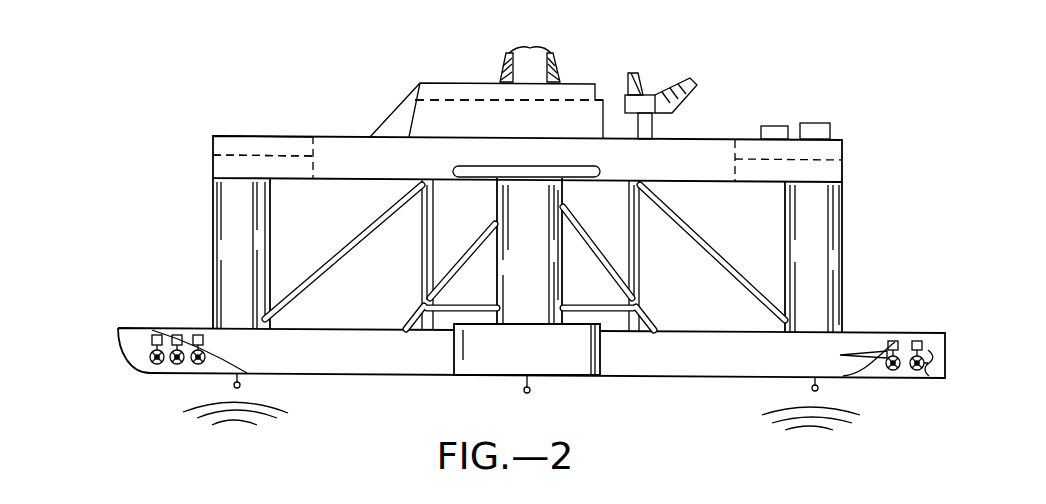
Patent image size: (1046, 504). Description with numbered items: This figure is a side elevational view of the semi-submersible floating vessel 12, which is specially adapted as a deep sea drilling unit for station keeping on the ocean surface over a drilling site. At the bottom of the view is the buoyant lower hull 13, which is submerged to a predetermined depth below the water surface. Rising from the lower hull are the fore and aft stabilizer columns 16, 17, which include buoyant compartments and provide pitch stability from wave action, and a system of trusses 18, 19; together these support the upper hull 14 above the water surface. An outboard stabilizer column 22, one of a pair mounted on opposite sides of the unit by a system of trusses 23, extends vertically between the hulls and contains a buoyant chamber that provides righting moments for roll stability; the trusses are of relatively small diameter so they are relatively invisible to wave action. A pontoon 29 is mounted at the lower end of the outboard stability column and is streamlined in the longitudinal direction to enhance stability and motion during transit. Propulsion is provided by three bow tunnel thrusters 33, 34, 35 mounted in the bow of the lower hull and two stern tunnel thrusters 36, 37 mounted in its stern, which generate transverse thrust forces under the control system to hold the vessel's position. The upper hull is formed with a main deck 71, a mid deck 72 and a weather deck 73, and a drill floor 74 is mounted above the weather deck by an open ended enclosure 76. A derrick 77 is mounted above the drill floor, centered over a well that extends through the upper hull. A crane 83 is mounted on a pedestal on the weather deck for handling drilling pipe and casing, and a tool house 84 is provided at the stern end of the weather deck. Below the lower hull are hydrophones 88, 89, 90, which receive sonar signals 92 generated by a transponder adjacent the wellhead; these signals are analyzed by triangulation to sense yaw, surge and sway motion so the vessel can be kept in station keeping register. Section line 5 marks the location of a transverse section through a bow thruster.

The section line 5- 5 is at (118, 343).
The semi-submersible floating vessel 12 is at (748, 95).
The lower hull 13 is at (362, 374).
The upper hull 14 is at (688, 139).
The fore stabilizer column 16 is at (213, 228).
The aft stabilizer column 17 is at (835, 220).
The truss 18 is at (333, 265).
The truss 19 is at (733, 267).
The outboard stabilizer column 22 is at (553, 199).
The truss 23 is at (480, 233).
The pontoon 29 is at (577, 367).
The bow tunnel thruster 33 is at (150, 375).
The bow tunnel thruster 34 is at (178, 374).
The bow tunnel thruster 35 is at (200, 366).
The stern tunnel thruster 36 is at (902, 376).
The stern tunnel thruster 37 is at (922, 372).
The main deck 71 is at (527, 159).
The mid deck 72 is at (264, 156).
The weather deck 73 is at (240, 137).
The drill floor 74 is at (465, 102).
The open ended enclosure 76 is at (586, 83).
The derrick 77 is at (553, 68).
The crane 83 is at (688, 80).
The tool house 84 is at (820, 123).
The hydrophone 88 is at (240, 386).
The hydrophone 89 is at (812, 390).
The hydrophone 90 is at (530, 392).
The sonar signals 92 is at (229, 435).